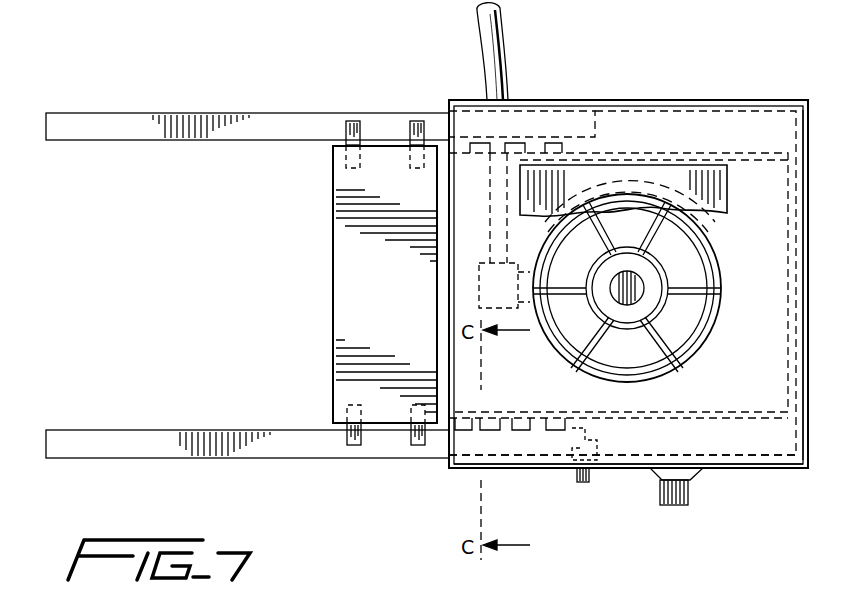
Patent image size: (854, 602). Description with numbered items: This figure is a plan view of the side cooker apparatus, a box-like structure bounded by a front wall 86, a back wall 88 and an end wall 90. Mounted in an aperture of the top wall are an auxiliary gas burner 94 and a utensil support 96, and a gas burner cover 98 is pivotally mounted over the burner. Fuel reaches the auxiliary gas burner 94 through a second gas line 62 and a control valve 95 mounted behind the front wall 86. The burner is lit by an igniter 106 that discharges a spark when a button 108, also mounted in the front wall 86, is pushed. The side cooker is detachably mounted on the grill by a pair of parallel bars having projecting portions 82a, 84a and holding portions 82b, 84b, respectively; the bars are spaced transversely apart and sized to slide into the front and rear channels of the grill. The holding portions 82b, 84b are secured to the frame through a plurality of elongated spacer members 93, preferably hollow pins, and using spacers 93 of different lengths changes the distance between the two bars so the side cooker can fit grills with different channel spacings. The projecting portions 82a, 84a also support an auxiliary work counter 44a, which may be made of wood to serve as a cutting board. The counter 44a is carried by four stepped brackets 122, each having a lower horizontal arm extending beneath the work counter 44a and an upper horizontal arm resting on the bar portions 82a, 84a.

The second gas line 62 is at (500, 55).
The projecting portion 84a is at (167, 142).
The holding portion 84b is at (580, 126).
The back wall 88 is at (706, 100).
The stepped brackets 122 is at (416, 121).
The spacer members 93 is at (480, 147).
The gas burner cover 98 is at (713, 188).
The auxiliary gas burner 94 is at (663, 272).
The utensil support 96 is at (722, 280).
The auxiliary work counter 44a is at (335, 318).
The projecting portion 82a is at (138, 430).
The holding portion 82b is at (515, 443).
The igniter 106 is at (613, 343).
The end wall 90 is at (806, 350).
The button 108 is at (579, 484).
The control valve 95 is at (688, 495).
The front wall 86 is at (771, 468).